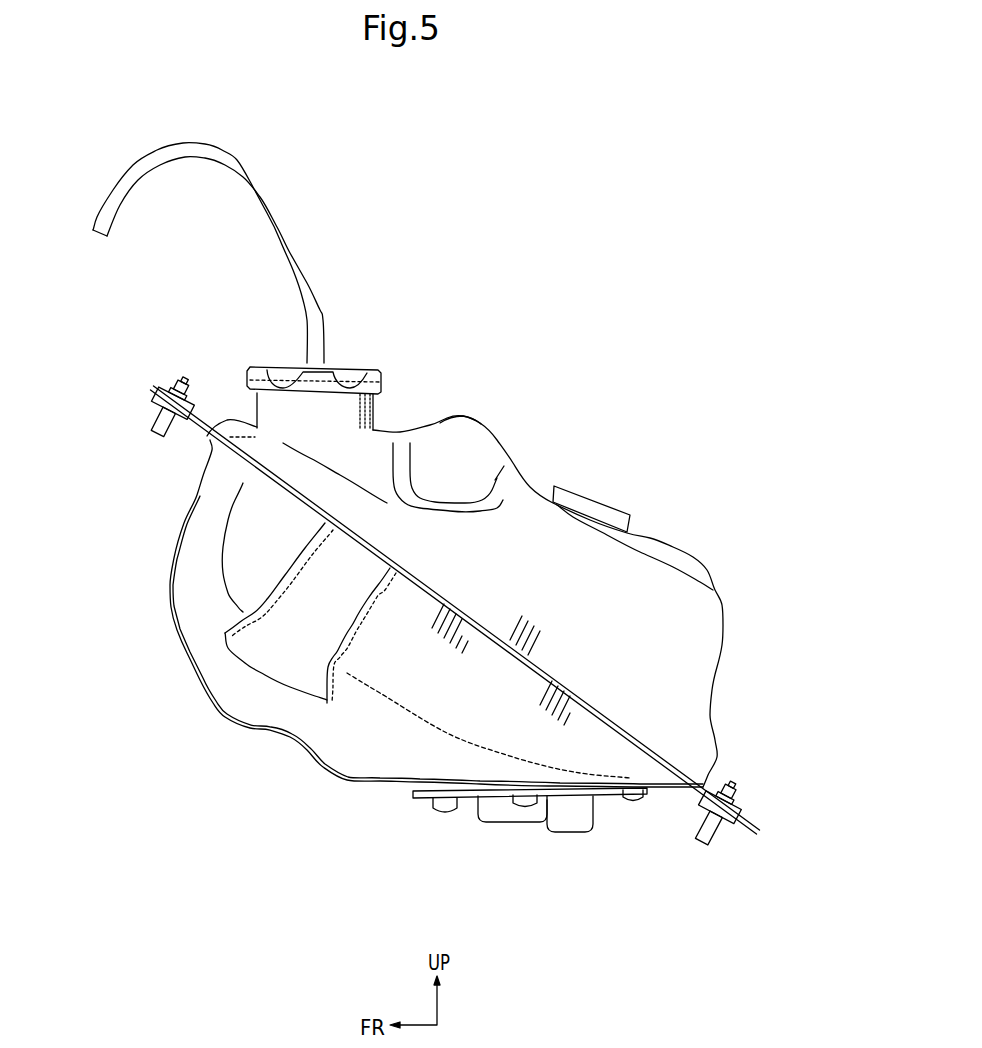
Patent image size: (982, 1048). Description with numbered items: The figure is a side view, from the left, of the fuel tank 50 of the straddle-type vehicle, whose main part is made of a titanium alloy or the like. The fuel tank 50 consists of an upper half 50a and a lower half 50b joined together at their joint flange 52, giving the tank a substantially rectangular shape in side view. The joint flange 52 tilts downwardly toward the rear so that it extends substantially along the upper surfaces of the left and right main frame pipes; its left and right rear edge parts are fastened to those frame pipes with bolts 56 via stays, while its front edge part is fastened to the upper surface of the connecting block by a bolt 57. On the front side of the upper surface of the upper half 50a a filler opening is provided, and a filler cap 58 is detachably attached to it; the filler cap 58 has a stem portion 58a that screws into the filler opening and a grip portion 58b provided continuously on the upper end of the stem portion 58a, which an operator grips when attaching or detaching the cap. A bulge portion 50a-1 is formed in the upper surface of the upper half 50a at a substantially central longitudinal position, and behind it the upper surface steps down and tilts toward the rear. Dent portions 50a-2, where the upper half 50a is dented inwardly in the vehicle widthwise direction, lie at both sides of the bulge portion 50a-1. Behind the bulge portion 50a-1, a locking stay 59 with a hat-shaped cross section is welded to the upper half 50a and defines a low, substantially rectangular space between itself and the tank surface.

The fuel tank 50 is at (617, 410).
The upper half 50a is at (633, 587).
The lower half 50b is at (343, 760).
The bulge portion 50a-1 is at (470, 417).
The dent portions 50a-2 is at (455, 487).
The joint flange 52 is at (663, 757).
The bolts 56 is at (738, 785).
The bolt 57 is at (197, 385).
The filler cap 58 is at (360, 370).
The stem portion 58a is at (253, 407).
The grip portion 58b is at (387, 385).
The locking stay 59 is at (610, 503).